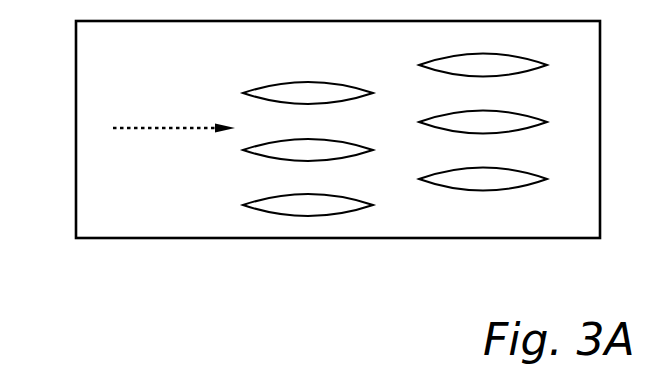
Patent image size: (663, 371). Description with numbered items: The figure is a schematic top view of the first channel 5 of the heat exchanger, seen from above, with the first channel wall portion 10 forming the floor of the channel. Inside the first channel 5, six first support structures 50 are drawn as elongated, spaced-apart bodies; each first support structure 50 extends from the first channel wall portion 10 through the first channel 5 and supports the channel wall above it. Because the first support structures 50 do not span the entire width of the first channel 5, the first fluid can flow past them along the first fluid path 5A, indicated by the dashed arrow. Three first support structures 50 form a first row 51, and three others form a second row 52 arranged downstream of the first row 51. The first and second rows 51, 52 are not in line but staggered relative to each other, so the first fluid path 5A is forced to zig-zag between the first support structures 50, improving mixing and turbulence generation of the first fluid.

The first channel wall portion 10 is at (110, 224).
The first fluid path 5A is at (148, 128).
The first channel 5 is at (579, 134).
The first support structures 50 is at (332, 245).
The first row 51 is at (294, 228).
The second row 52 is at (520, 201).